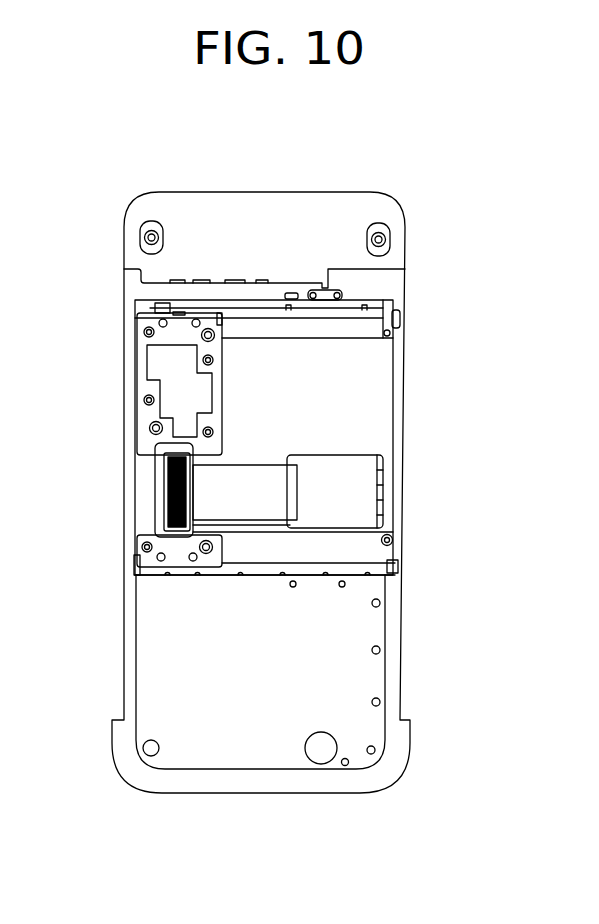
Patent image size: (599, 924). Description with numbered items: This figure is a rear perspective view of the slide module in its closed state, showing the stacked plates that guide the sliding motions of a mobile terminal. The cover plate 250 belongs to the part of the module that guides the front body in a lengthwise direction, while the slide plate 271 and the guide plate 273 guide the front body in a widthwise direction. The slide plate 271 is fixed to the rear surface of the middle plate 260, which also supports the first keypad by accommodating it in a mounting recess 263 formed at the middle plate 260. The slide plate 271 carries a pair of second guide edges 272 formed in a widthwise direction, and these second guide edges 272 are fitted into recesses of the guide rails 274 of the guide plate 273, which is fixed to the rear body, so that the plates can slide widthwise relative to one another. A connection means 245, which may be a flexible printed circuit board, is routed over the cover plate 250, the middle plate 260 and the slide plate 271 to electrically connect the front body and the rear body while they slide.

The cover plate 250 is at (268, 202).
The middle plate 260 is at (398, 291).
The slide plate 271 is at (385, 396).
The guide plate 273 is at (138, 482).
The connection means 245 is at (290, 490).
The second guide edges 272 is at (313, 563).
The guide rails 274 is at (134, 563).
The mounting recess 263 is at (380, 670).